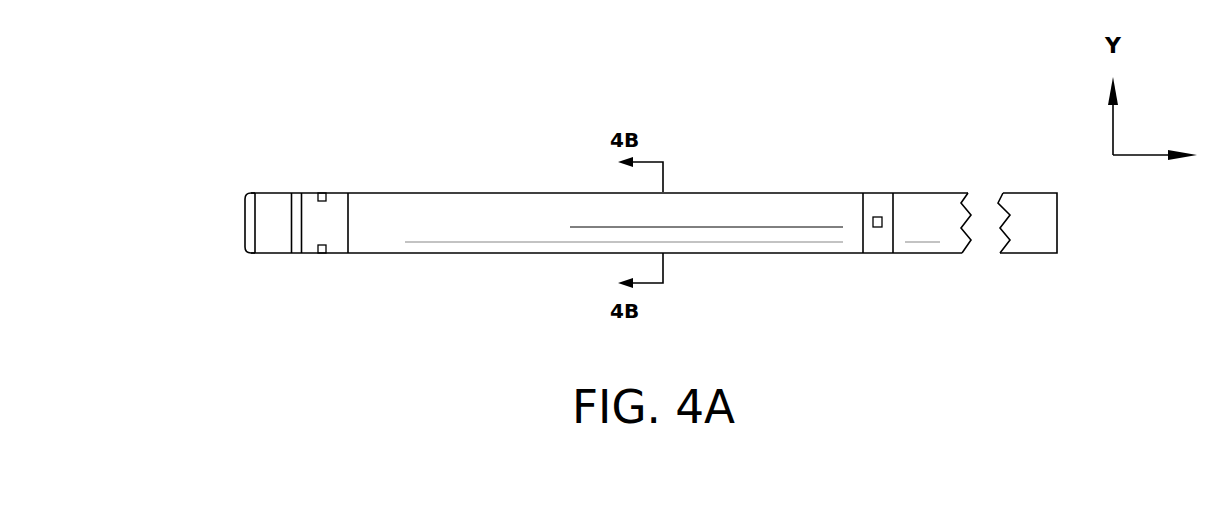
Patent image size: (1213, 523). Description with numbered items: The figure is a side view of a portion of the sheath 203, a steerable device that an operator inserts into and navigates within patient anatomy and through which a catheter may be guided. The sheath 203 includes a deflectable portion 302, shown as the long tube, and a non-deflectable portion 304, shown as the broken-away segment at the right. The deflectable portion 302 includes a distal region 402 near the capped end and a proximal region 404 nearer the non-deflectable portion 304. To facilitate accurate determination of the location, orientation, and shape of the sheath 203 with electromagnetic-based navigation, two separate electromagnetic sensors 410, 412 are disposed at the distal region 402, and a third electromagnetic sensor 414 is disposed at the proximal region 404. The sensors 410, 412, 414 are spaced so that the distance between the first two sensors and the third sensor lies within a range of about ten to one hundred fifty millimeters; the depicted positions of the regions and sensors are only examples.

The sheath 203 is at (247, 167).
The deflectable portion 302 is at (485, 193).
The non-deflectable portion 304 is at (1028, 253).
The distal region 402 is at (343, 180).
The proximal region 404 is at (880, 268).
The electromagnetic sensor 410 is at (322, 193).
The electromagnetic sensor 412 is at (320, 253).
The third electromagnetic sensor 414 is at (877, 217).